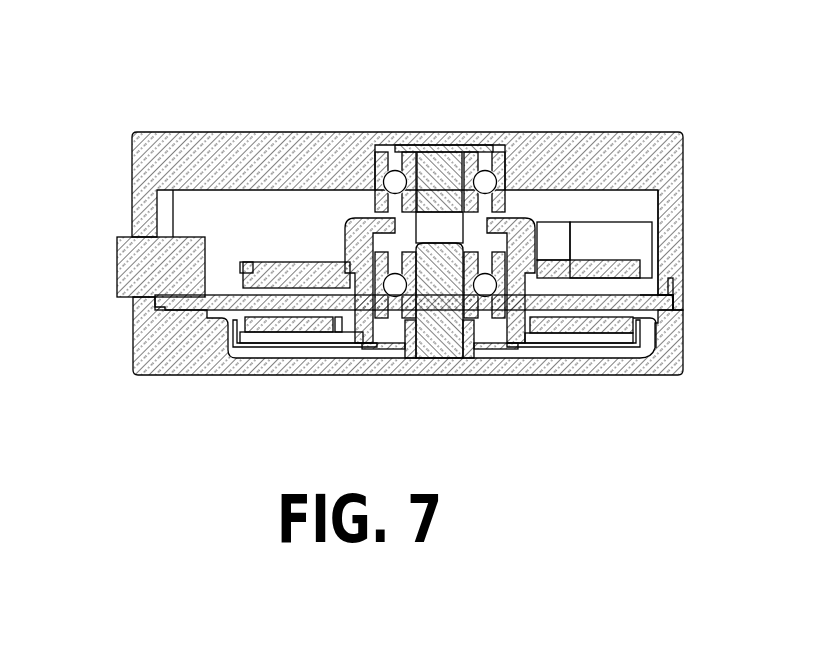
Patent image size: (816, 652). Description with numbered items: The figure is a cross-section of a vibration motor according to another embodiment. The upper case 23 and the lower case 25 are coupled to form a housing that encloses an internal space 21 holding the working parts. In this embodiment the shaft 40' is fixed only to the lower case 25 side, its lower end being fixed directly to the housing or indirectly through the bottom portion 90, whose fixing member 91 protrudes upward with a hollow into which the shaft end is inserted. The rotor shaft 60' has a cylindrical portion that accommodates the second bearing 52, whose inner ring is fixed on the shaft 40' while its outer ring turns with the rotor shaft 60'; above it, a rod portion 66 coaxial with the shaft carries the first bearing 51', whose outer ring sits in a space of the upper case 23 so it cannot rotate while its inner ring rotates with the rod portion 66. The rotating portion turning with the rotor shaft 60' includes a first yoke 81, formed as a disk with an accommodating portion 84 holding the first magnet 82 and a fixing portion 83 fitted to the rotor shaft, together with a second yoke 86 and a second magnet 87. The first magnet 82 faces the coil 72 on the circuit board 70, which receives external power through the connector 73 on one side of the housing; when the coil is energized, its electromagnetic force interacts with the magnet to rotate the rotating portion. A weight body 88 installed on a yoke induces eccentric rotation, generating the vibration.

The internal space 21 is at (206, 206).
The upper case 23 is at (592, 140).
The lower case 25 is at (165, 370).
The shaft 40' is at (462, 331).
The first bearing 51' is at (432, 121).
The second bearing 52 is at (395, 322).
The rotor shaft 60' is at (620, 380).
The rod portion 66 is at (442, 168).
The circuit board 70 is at (620, 307).
The coil 72 is at (160, 300).
The connector 73 is at (118, 255).
The first yoke 81 is at (322, 64).
The first magnet 82 is at (250, 262).
The fixing portion 83 is at (358, 218).
The accommodating portion 84 is at (280, 262).
The second yoke 86 is at (325, 347).
The second magnet 87 is at (292, 345).
The weight body 88 is at (605, 240).
The bottom portion 90 is at (258, 335).
The fixing member 91 is at (515, 347).